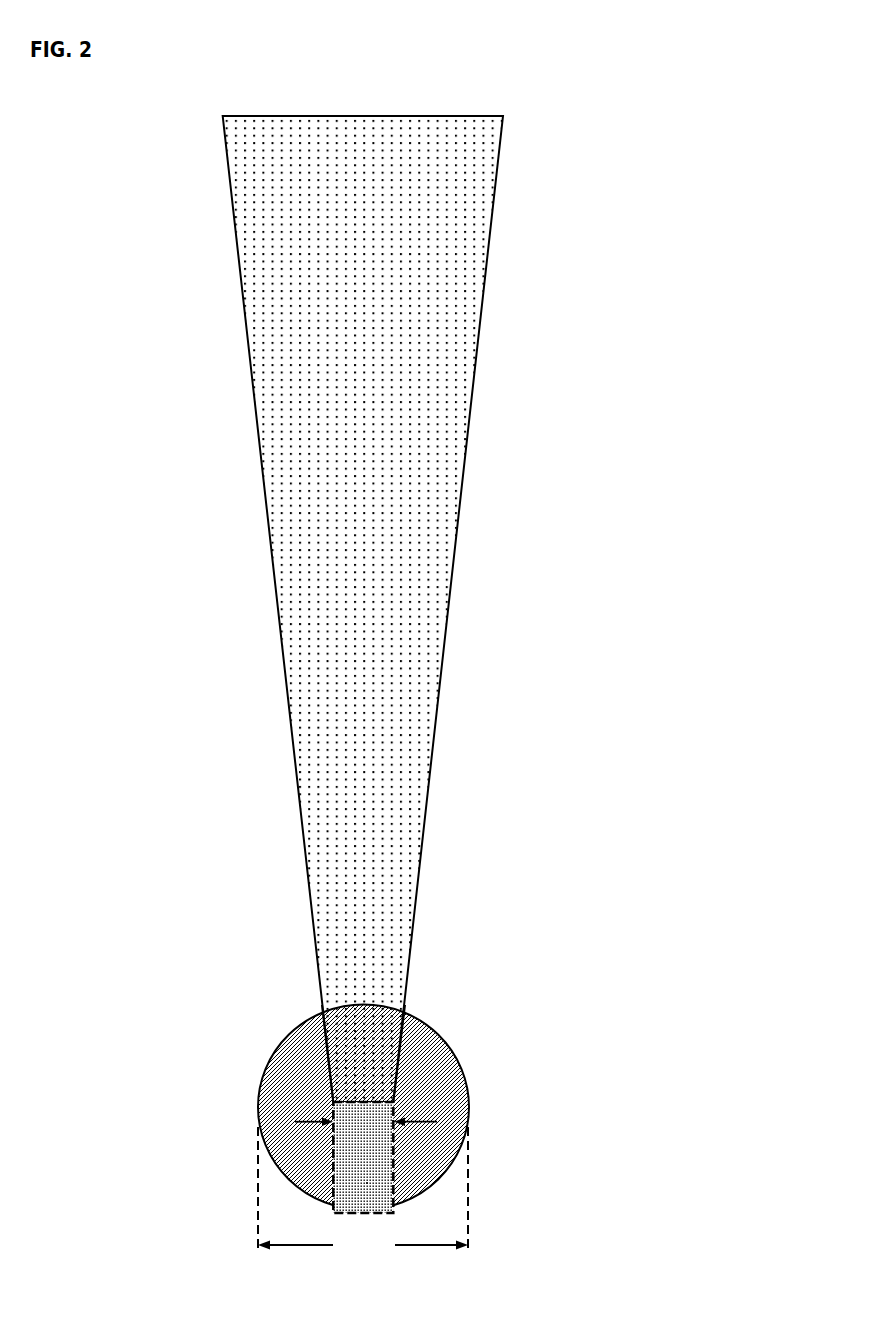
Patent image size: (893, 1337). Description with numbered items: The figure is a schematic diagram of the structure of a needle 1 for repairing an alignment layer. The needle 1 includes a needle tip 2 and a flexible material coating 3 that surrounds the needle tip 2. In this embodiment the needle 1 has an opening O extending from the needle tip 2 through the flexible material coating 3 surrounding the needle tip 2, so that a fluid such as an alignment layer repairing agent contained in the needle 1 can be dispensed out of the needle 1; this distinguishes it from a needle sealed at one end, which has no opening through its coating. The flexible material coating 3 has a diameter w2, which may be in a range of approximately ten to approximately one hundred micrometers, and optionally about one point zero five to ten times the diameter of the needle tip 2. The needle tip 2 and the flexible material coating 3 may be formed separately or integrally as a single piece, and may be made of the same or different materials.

The needle 1 is at (492, 640).
The needle tip 2 is at (360, 1100).
The flexible material coating 3 is at (468, 1107).
The opening O is at (367, 1183).
The diameter of the flexible material coating w2 is at (363, 1197).